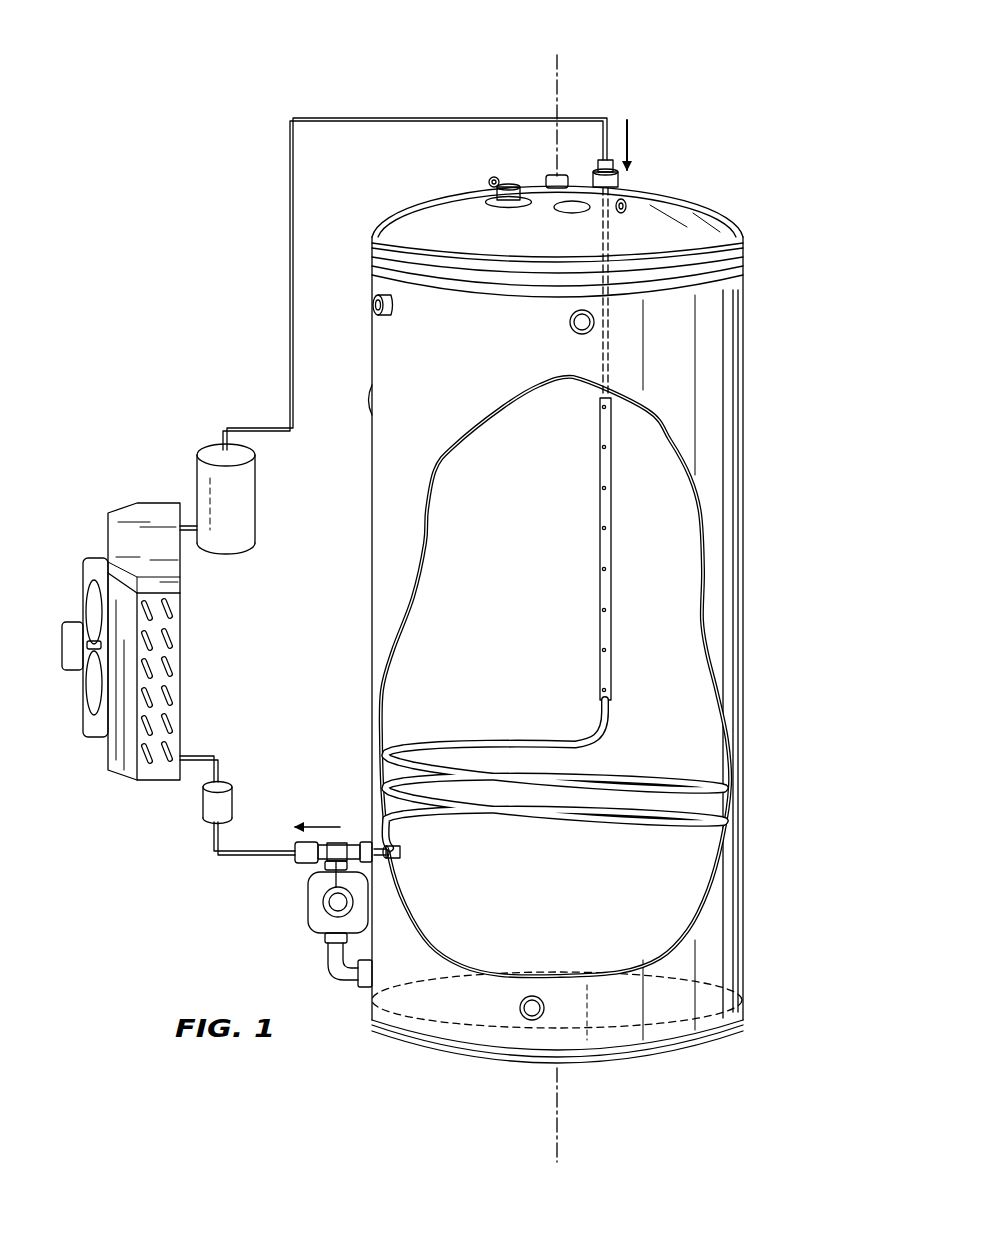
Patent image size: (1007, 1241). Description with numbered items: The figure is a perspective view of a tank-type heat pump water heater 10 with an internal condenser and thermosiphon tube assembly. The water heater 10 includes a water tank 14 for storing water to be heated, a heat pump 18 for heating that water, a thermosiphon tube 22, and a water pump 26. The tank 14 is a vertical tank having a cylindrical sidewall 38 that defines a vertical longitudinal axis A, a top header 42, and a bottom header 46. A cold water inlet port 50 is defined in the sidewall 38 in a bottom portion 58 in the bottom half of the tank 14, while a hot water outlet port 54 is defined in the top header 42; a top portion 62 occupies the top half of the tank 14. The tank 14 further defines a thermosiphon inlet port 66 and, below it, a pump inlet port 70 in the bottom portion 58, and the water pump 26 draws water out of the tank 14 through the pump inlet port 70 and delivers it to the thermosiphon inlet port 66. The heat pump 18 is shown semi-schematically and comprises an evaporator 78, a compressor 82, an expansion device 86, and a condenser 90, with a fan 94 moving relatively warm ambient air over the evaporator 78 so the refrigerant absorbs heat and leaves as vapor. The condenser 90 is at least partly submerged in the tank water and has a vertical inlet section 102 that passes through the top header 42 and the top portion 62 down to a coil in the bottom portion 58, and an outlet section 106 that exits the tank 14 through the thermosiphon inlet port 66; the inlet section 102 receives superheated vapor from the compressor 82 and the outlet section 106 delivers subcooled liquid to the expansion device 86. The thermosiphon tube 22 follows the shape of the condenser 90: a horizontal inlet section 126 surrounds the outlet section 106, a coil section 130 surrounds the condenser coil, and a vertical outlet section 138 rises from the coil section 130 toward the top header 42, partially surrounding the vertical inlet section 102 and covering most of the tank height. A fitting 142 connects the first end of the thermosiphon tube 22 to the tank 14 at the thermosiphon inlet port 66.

The water heater 10 is at (724, 106).
The vertical longitudinal axis A is at (557, 92).
The water tank 14 is at (614, 591).
The heat pump 18 is at (321, 574).
The thermosiphon tube 22 is at (585, 735).
The water pump 26 is at (316, 893).
The cylindrical sidewall 38 is at (516, 677).
The top header 42 is at (700, 207).
The bottom header 46 is at (568, 970).
The cold water inlet port 50 is at (532, 1020).
The hot water outlet port 54 is at (508, 187).
The bottom portion 58 is at (759, 795).
The top portion 62 is at (589, 591).
The thermosiphon inlet port 66 is at (353, 842).
The pump inlet port 70 is at (365, 987).
The evaporator 78 is at (108, 530).
The compressor 82 is at (252, 480).
The expansion device 86 is at (232, 795).
The condenser 90 is at (290, 328).
The fan 94 is at (92, 602).
The vertical inlet section 102 is at (600, 394).
The outlet section 106 is at (242, 855).
The horizontal inlet section 126 is at (395, 862).
The coil section 130 is at (554, 759).
The vertical outlet section 138 is at (603, 444).
The fitting 142 is at (325, 838).